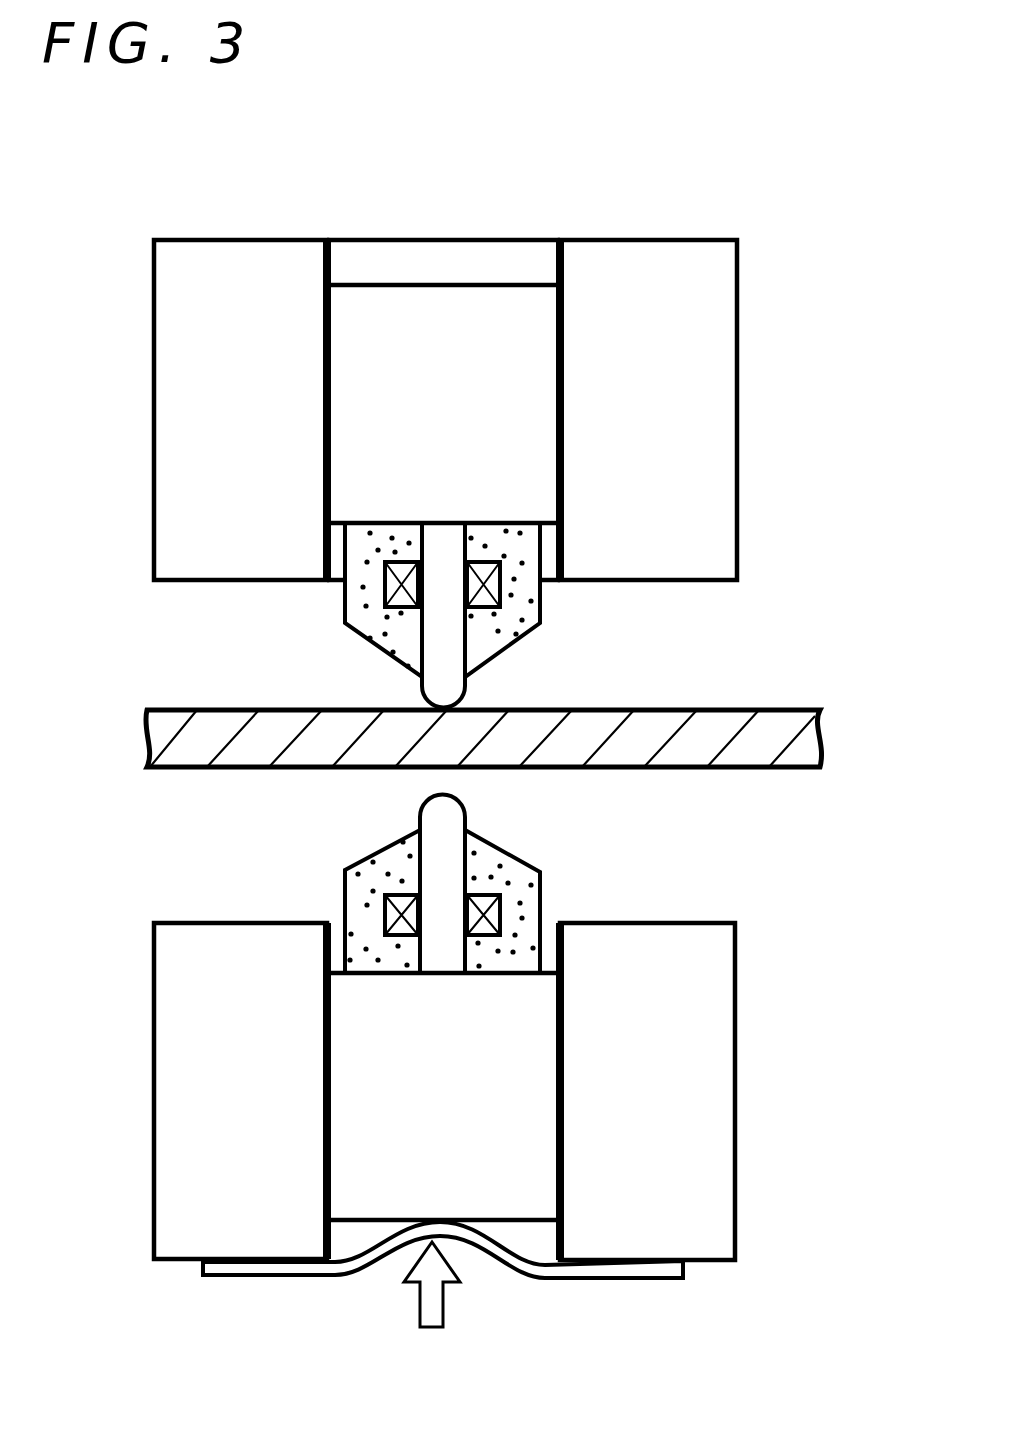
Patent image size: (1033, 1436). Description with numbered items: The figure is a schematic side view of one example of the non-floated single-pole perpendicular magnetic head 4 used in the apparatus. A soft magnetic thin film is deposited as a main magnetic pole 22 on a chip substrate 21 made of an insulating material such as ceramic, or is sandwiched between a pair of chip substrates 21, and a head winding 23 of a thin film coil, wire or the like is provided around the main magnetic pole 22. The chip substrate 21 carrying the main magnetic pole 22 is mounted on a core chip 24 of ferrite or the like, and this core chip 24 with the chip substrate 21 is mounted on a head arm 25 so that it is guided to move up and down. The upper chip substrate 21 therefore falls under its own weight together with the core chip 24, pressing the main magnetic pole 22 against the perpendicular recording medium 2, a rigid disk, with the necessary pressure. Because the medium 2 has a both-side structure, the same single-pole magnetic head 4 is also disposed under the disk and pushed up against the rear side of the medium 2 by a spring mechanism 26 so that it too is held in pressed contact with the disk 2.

The perpendicular recording medium 2 is at (810, 740).
The single-pole magnetic head 4 is at (841, 357).
The chip substrate 21 is at (507, 652).
The main magnetic pole 22 is at (387, 642).
The head winding 23 is at (500, 595).
The core chip 24 is at (420, 302).
The head arm 25 is at (648, 265).
The spring mechanism 26 is at (488, 1240).